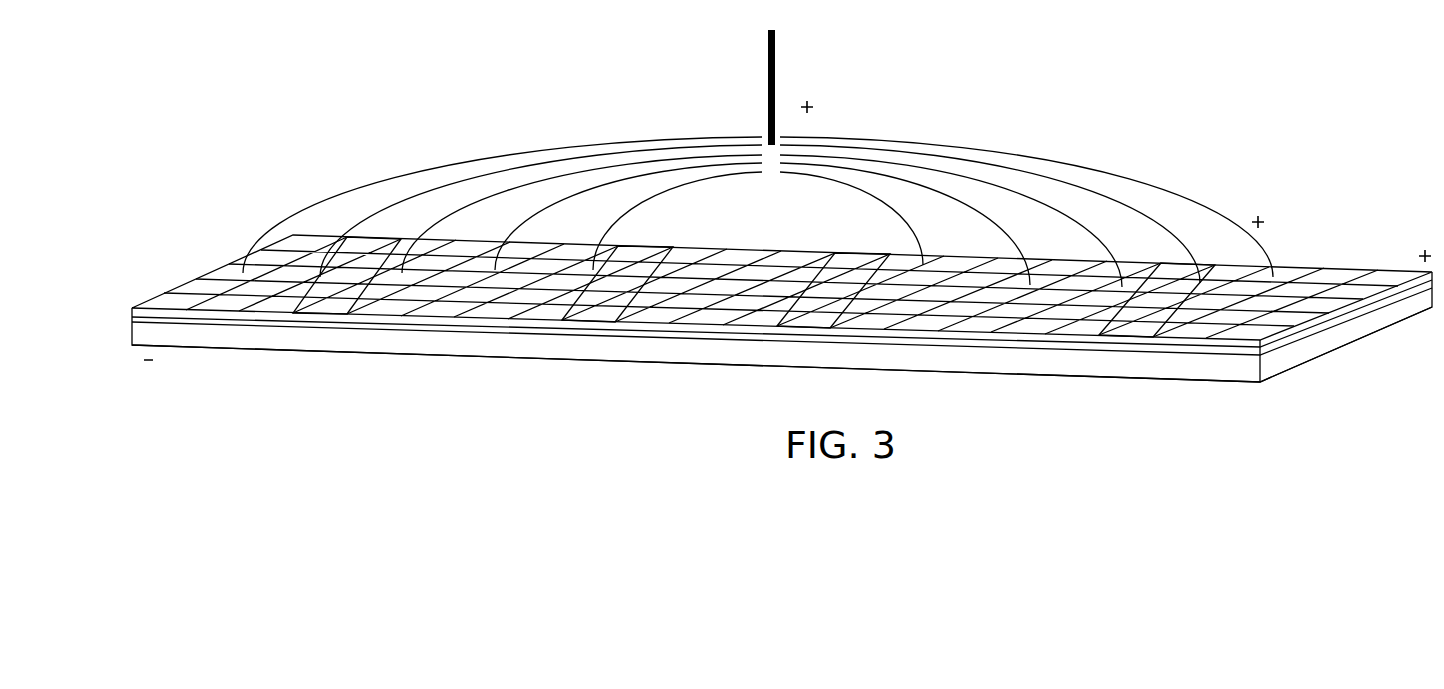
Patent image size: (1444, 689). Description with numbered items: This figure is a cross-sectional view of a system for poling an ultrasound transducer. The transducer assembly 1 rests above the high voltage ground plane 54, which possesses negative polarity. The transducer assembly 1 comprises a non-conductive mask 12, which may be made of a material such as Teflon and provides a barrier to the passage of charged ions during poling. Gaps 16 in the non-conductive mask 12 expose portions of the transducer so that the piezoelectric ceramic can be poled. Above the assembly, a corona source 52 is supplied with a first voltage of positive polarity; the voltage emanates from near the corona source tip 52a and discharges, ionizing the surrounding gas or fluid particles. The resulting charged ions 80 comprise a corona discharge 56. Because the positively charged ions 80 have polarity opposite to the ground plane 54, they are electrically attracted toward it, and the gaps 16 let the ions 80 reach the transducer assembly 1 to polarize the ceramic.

The transducer assembly 1 is at (131, 307).
The non-conductive mask 12 is at (207, 284).
The gaps 16 is at (627, 252).
The corona source 52 is at (776, 48).
The corona source tip 52a is at (765, 138).
The high voltage ground plane 54 is at (603, 362).
The corona discharge 56 is at (445, 146).
The charged ions 80 is at (533, 216).